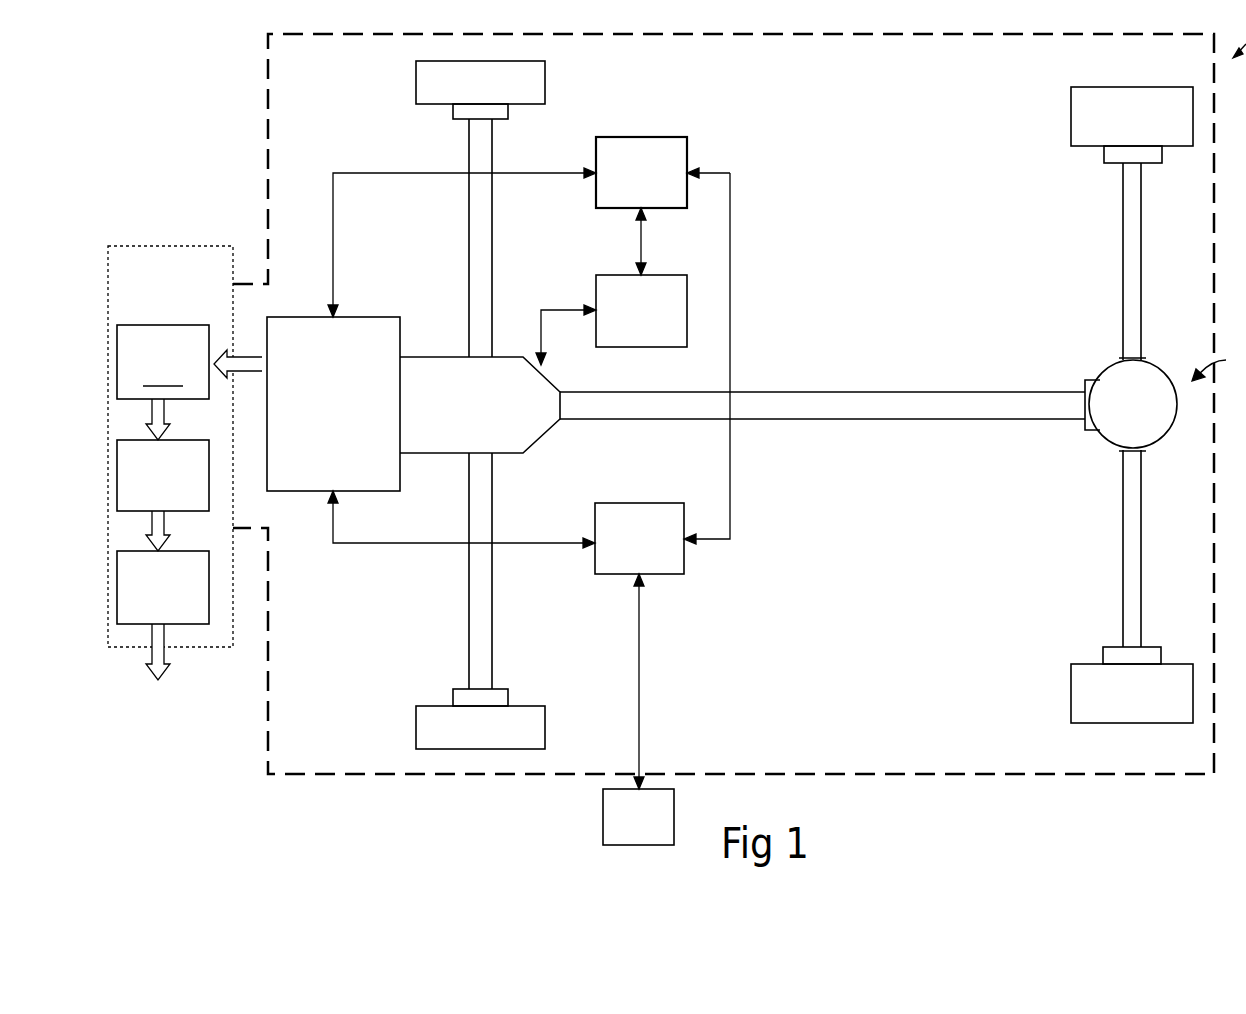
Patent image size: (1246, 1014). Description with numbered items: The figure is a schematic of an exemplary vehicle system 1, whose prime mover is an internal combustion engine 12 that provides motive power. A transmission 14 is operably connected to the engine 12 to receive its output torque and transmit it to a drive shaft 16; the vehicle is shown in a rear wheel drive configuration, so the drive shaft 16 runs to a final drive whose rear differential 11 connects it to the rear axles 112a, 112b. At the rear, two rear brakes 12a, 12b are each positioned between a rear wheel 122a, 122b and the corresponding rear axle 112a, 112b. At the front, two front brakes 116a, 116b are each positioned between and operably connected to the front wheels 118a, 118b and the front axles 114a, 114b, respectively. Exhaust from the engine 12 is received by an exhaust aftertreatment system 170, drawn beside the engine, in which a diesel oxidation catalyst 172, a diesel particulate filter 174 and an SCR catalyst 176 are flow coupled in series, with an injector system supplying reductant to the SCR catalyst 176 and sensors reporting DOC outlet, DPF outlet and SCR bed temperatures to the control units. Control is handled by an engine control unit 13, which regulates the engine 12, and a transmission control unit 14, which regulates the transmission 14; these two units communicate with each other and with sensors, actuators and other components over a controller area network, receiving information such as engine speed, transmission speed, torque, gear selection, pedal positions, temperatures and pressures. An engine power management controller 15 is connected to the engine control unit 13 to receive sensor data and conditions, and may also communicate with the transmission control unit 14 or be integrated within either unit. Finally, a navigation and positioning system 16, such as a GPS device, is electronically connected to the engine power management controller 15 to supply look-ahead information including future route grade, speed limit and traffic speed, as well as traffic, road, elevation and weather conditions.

The vehicle system 1 is at (1217, 364).
The rear differential 11 is at (1099, 433).
The internal combustion engine 12 is at (343, 411).
The rear brake 12a is at (1104, 160).
The rear brake 12b is at (1103, 652).
The engine control unit 13 is at (675, 138).
The transmission / transmission control unit 14 is at (489, 411).
The engine power management controller 15 is at (673, 503).
The navigation and positioning system / drive shaft 16 is at (832, 391).
The rear axle 112a is at (1123, 270).
The rear axle 112b is at (1123, 600).
The front axle 114a is at (469, 216).
The front axle 114b is at (469, 621).
The front brake 116a is at (453, 116).
The front brake 116b is at (453, 690).
The front wheel 118a is at (416, 78).
The front wheel 118b is at (416, 718).
The rear wheel 122a is at (1071, 117).
The rear wheel 122b is at (1071, 692).
The exhaust aftertreatment system 170 is at (185, 463).
The diesel oxidation catalyst 172 is at (163, 362).
The diesel particulate filter 174 is at (163, 475).
The SCR catalyst 176 is at (163, 587).